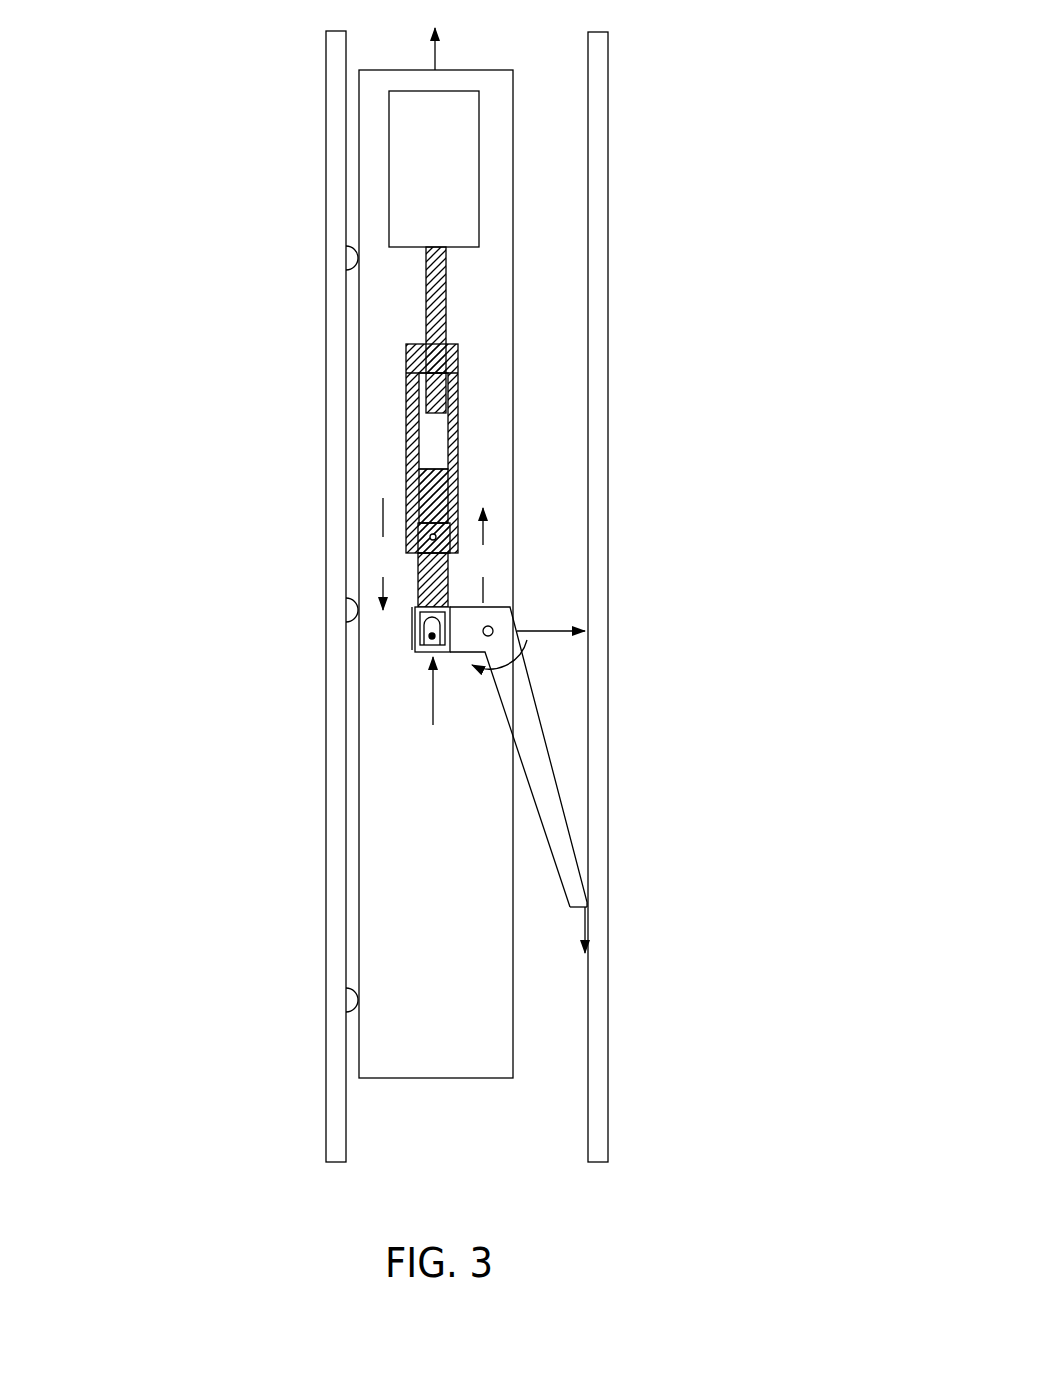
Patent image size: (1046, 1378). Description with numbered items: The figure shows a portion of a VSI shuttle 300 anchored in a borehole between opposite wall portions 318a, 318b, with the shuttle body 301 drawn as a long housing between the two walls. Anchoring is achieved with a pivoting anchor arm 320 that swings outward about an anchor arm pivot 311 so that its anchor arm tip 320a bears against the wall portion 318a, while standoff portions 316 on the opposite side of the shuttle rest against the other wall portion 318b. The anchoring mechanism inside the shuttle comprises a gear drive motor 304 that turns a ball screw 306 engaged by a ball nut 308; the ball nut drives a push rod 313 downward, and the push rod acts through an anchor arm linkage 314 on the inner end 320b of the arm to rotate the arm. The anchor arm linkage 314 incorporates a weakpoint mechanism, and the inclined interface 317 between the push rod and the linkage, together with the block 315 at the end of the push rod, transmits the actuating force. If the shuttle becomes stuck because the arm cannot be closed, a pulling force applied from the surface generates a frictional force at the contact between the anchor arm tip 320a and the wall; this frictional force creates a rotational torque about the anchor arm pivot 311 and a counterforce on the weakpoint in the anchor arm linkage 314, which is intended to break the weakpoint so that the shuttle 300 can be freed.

The VSI shuttle portion 300 is at (563, 1212).
The housing frame 301 is at (443, 1072).
The gear drive motor 304 is at (389, 178).
The ball screw 306 is at (425, 307).
The ball nut 308 is at (406, 360).
The anchor arm pivot 311 is at (490, 626).
The push rod 313 is at (408, 485).
The anchor arm linkage 314 is at (415, 575).
The roller block 315 is at (415, 617).
The standoff portions 316 is at (343, 609).
The inclined surface 317 is at (455, 515).
The wall portion 318a is at (607, 102).
The wall portion 318b is at (338, 62).
The anchor arm 320 is at (535, 755).
The anchor arm tip 320a is at (594, 902).
The lever actuated end 320b is at (396, 625).